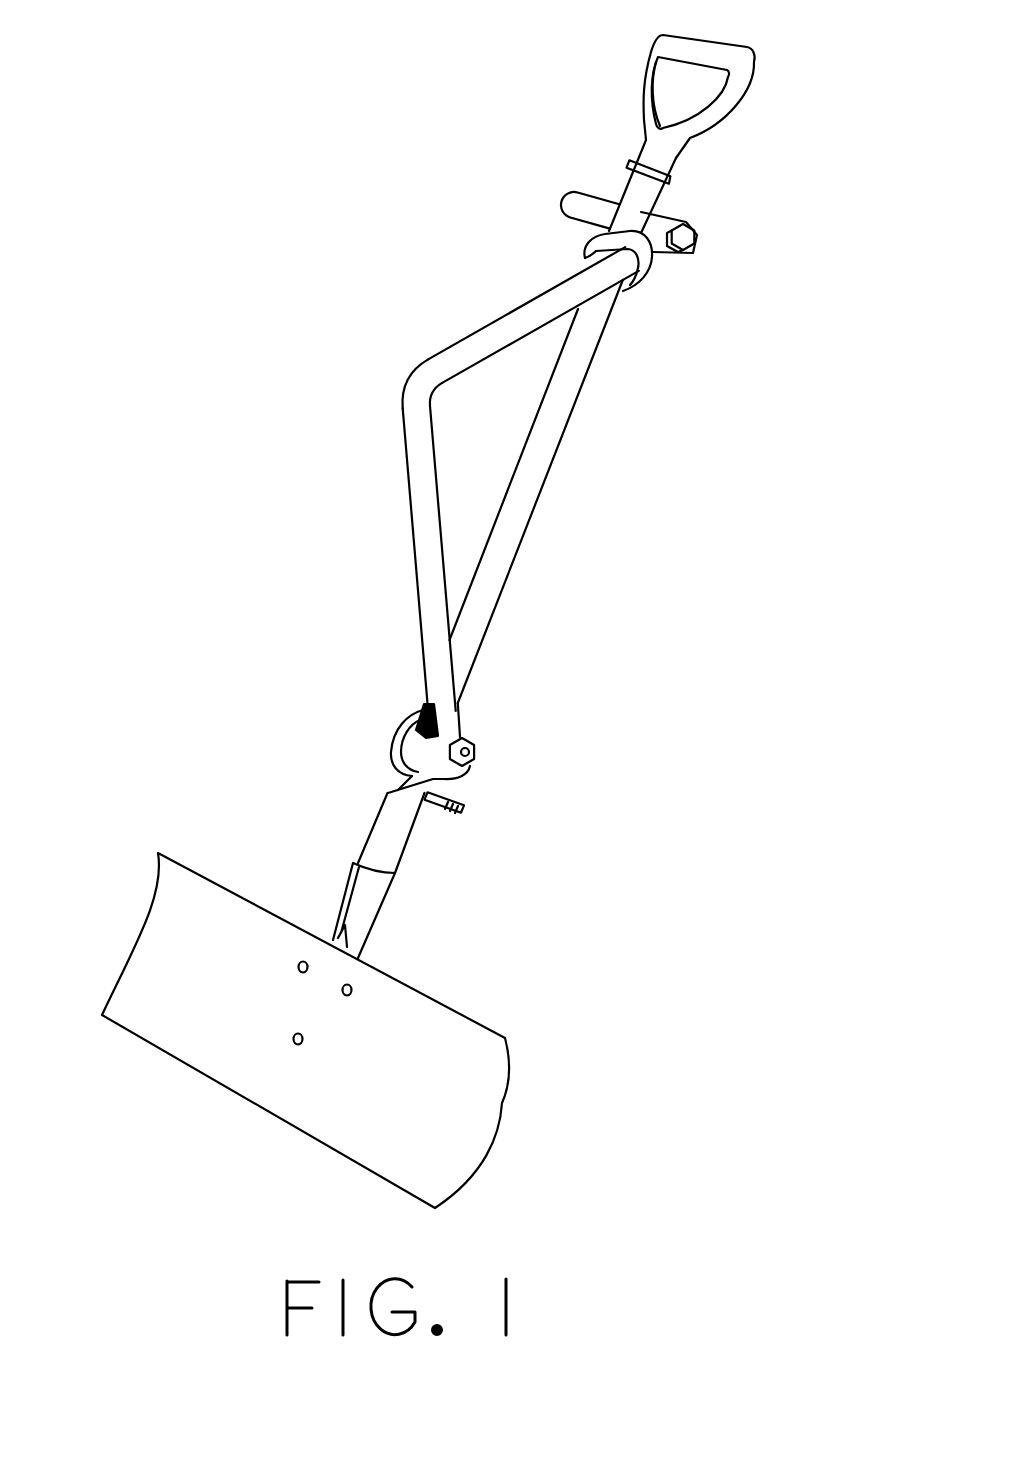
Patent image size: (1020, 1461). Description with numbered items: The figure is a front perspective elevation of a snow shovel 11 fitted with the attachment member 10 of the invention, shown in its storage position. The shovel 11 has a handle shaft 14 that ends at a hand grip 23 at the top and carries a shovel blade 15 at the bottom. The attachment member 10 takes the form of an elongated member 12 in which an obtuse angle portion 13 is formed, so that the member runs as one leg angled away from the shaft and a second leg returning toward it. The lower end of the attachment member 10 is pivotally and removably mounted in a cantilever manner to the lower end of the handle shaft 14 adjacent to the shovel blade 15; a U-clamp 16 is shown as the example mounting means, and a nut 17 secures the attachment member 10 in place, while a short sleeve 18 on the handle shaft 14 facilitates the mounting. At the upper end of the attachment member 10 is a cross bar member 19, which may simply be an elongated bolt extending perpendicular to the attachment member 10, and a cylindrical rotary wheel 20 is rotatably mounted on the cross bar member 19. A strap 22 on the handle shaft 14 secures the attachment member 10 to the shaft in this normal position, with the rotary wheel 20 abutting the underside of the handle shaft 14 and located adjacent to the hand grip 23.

The attachment member 10 is at (474, 331).
The snow shovel 11 is at (526, 544).
The elongated member 12 is at (427, 516).
The obtuse angle portion 13 is at (423, 385).
The handle shaft 14 is at (550, 427).
The shovel blade 15 is at (437, 1046).
The U-clamp 16 is at (395, 731).
The nut 17 is at (477, 732).
The short sleeve 18 is at (410, 773).
The cross bar member 19 is at (703, 240).
The cylindrical rotary wheel 20 is at (595, 207).
The strap 22 is at (645, 258).
The hand grip 23 is at (693, 45).